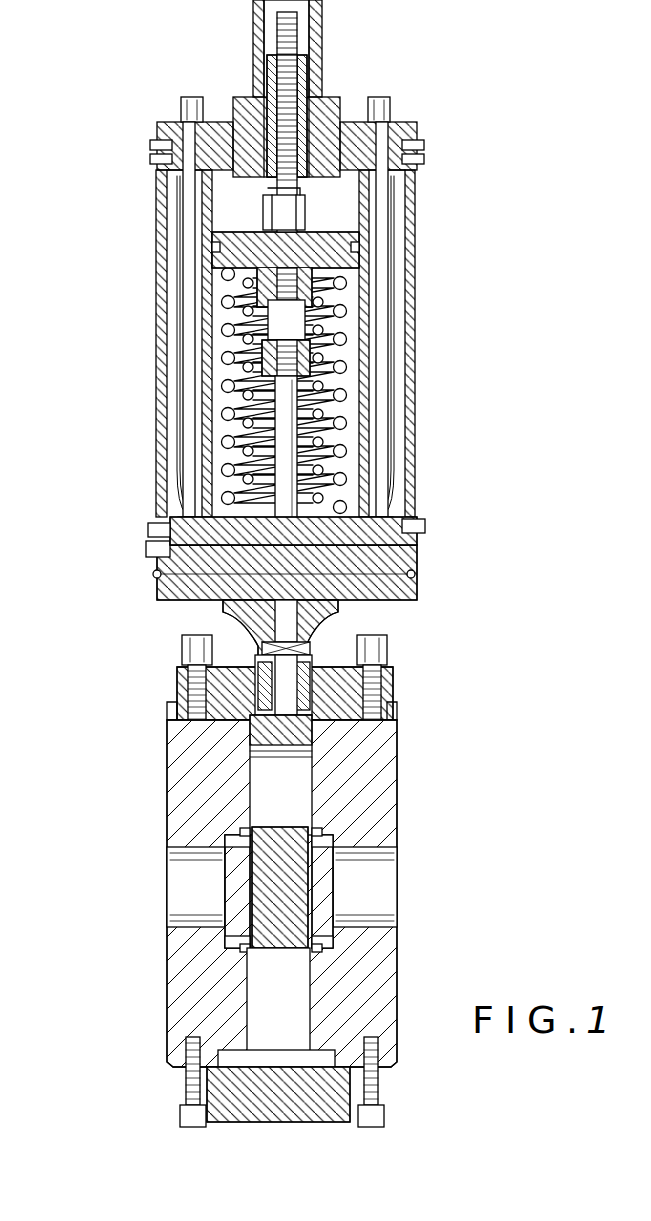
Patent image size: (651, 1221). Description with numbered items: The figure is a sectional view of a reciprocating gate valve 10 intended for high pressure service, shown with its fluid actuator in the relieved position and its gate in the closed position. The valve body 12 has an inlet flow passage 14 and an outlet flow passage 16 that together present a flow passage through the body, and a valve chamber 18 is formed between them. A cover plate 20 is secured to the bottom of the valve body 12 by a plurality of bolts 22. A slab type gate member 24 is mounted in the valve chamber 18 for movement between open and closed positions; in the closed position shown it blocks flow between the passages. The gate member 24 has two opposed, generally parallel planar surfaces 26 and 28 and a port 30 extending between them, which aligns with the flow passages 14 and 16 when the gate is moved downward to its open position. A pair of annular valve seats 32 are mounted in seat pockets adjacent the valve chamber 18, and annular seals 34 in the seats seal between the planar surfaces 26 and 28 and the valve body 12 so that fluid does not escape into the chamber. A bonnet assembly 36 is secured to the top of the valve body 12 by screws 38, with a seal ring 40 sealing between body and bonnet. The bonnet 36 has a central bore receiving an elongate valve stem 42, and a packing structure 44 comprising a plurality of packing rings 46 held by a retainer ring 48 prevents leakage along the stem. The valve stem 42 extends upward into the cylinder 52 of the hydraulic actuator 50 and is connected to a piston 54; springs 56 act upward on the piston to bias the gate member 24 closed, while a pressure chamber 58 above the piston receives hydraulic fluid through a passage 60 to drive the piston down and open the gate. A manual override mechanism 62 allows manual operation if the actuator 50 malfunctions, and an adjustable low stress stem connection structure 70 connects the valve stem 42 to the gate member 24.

The reciprocating gate valve 10 is at (484, 702).
The valve body 12 is at (185, 748).
The inlet flow passage 14 is at (375, 888).
The outlet flow passage 16 is at (190, 880).
The valve chamber 18 is at (286, 1007).
The cover plate 20 is at (312, 1125).
The bolts 22 is at (178, 1090).
The slab type gate member 24 is at (290, 962).
The planar surface 26 is at (268, 908).
The planar surface 28 is at (372, 910).
The port 30 is at (300, 775).
The annular valve seats 32 is at (345, 836).
The annular seals 34 is at (225, 840).
The bonnet assembly 36 is at (390, 681).
The screws 38 is at (215, 706).
The seal ring 40 is at (340, 746).
The valve stem 42 is at (292, 472).
The packing structure 44 is at (150, 556).
The packing rings 46 is at (405, 531).
The retainer ring 48 is at (175, 530).
The hydraulic actuator 50 is at (130, 329).
The cylinder 52 is at (381, 372).
The piston 54 is at (350, 267).
The springs 56 is at (226, 396).
The pressure chamber 58 is at (346, 212).
The passage 60 is at (182, 156).
The manual override mechanism 62 is at (333, 51).
The adjustable low stress stem connection structure 70 is at (240, 645).